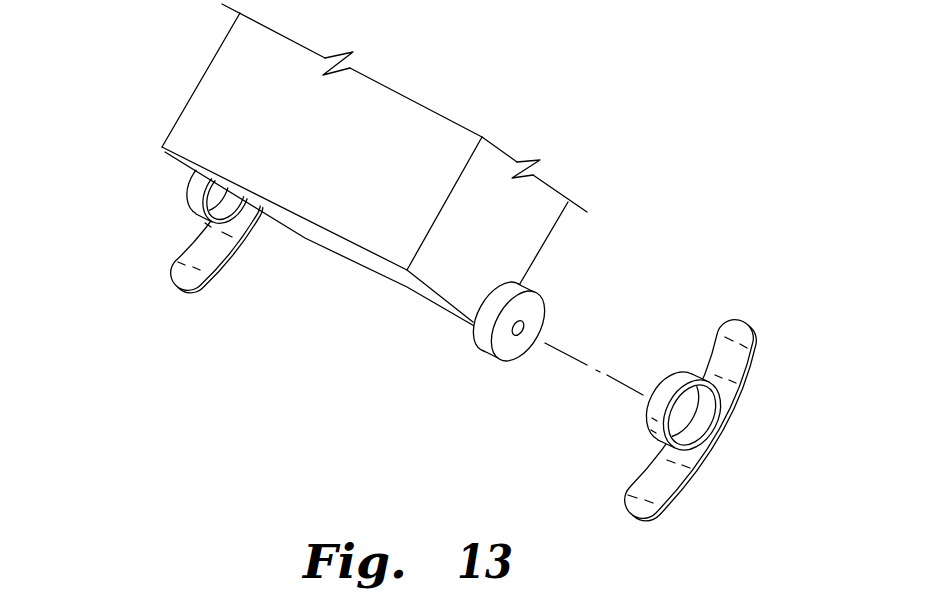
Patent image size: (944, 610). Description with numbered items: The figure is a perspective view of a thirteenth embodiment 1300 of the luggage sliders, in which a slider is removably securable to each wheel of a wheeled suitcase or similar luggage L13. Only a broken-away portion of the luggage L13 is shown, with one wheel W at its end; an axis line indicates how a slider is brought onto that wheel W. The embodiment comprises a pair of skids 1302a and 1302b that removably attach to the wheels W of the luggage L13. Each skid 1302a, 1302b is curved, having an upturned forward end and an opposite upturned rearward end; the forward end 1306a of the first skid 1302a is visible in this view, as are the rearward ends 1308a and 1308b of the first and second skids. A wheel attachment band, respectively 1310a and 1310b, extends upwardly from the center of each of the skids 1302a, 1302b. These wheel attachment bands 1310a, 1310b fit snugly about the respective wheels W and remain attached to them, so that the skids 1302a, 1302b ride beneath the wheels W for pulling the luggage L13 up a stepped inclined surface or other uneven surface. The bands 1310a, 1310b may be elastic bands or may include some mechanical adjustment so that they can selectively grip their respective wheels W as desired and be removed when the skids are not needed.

The thirteenth embodiment of the luggage sliders 1300 is at (429, 253).
The first skid 1302a is at (659, 374).
The second skid 1302b is at (140, 220).
The forward end of the first skid 1306a is at (742, 320).
The rearward end of the first skid 1308a is at (627, 492).
The rearward end of the second skid 1308b is at (167, 271).
The wheel attachment band of the first skid 1310a is at (658, 372).
The wheel attachment band of the second skid 1310b is at (190, 175).
The luggage L13 is at (355, 138).
The wheel W is at (482, 348).